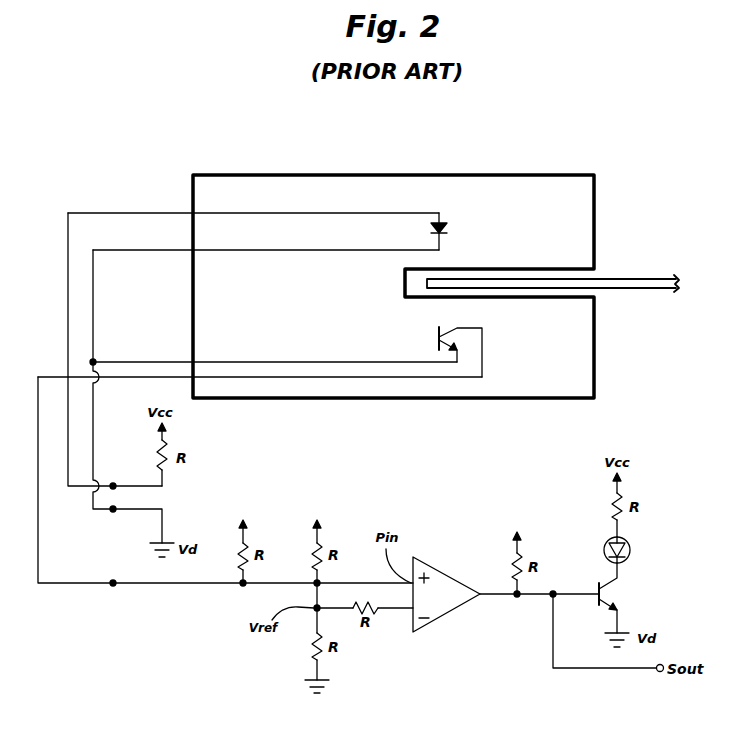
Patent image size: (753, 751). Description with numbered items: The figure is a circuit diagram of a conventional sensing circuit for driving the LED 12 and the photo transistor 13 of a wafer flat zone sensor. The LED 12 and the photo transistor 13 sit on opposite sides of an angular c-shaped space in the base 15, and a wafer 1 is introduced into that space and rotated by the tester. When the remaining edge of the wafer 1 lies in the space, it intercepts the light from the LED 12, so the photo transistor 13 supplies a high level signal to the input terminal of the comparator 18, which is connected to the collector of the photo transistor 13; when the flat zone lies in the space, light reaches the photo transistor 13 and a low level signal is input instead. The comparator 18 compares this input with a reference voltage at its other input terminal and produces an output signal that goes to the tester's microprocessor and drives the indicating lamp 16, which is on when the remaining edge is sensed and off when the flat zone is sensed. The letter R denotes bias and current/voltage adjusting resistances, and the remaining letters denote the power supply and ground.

The wafer 1 is at (642, 289).
The LED 12 is at (449, 231).
The photo transistor 13 is at (457, 337).
The base 15 is at (364, 180).
The indicating lamp 16 is at (631, 553).
The comparator 18 is at (447, 613).